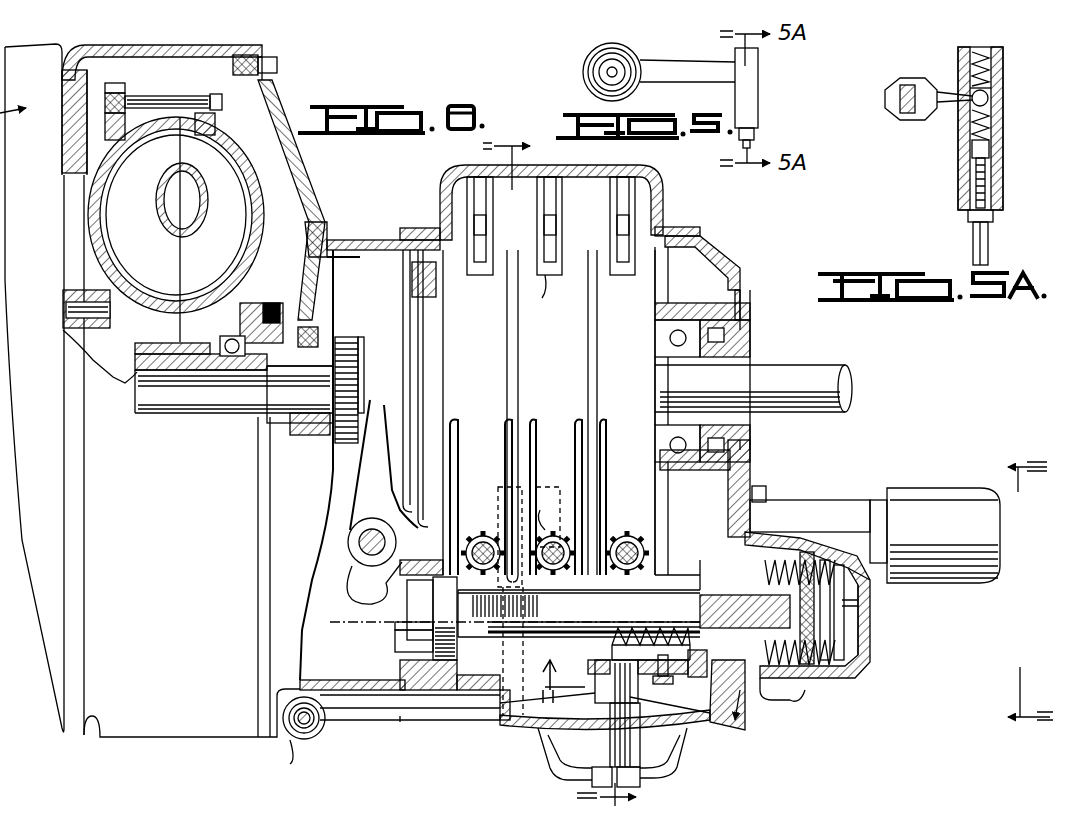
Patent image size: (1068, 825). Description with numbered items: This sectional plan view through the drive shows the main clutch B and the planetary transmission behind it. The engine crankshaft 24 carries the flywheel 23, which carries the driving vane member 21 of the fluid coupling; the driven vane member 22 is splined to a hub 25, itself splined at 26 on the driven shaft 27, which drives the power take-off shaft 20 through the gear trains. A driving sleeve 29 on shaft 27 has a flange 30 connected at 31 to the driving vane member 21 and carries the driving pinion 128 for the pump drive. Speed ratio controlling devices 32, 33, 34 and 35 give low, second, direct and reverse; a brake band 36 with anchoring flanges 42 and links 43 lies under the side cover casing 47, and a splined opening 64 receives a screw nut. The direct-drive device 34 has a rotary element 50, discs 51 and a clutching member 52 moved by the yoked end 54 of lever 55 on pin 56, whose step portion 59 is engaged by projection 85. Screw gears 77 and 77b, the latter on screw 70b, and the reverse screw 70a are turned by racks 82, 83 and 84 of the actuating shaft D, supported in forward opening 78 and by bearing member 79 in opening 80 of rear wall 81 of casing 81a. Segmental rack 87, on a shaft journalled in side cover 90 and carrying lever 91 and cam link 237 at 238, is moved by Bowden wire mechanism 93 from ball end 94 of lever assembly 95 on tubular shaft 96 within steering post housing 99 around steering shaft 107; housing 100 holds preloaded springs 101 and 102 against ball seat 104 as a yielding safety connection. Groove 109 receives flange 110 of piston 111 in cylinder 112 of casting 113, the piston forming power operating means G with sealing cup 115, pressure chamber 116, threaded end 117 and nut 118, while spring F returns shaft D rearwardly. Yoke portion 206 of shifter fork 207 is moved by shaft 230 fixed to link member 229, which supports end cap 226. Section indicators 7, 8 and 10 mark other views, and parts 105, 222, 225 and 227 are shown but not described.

In FIG. 6, the power take-off shaft 20 is at (852, 388).
In FIG. 6, the driving vane member 21 is at (252, 190).
In FIG. 6, the driven vane member 22 is at (162, 312).
In FIG. 6, the engine flywheel 23 is at (118, 86).
In FIG. 6, the engine crankshaft 24 is at (72, 340).
In FIG. 6, the hub 25 is at (140, 376).
In FIG. 6, the spline 26 is at (158, 378).
In FIG. 6, the driven shaft 27 is at (222, 392).
In FIG. 6, the driving pinion 128 is at (300, 380).
In FIG. 6, the driving sleeve 29 is at (312, 434).
In FIG. 6, the hub or flange 30 is at (270, 270).
In FIG. 6, the connection 31 is at (278, 300).
In FIG. 6, the low speed braking device 32 is at (566, 250).
In FIG. 6, the second speed braking device 33 is at (502, 252).
In FIG. 6, the third speed clutching controlling device 34 is at (390, 290).
In FIG. 6, the reverse braking device 35 is at (670, 228).
In FIG. 6, the outer band 36 is at (606, 322).
In FIG. 6, the anchoring flanges 42 is at (555, 289).
In FIG. 6, the links 43 is at (536, 212).
In FIG. 6, the transmission side cover casing 47 is at (565, 172).
In FIG. 6, the rotary controlling element 50 is at (442, 228).
In FIG. 6, the discs 51 is at (400, 245).
In FIG. 6, the axially movable clutching member 52 is at (396, 296).
In FIG. 6, the yoked end 54 is at (378, 340).
In FIG. 6, the actuating lever 55 is at (360, 486).
In FIG. 6, the pin 56 is at (348, 545).
In FIG. 6, the step actuating portion 59 is at (366, 600).
In FIG. 6, the splined opening 64 is at (553, 543).
In FIG. 6, the operating shaft or screw 70a is at (652, 540).
In FIG. 6, the operating shaft or screw 70b is at (492, 530).
In FIG. 6, the gear 77 is at (546, 512).
In FIG. 6, the gear 77b is at (422, 600).
In FIG. 6, the forward opening 78 is at (420, 650).
In FIG. 6, the bearing member 79 is at (712, 556).
In FIG. 6, the opening 80 is at (742, 695).
In FIG. 6, the rear end wall 81 is at (745, 488).
In FIG. 6, the transmission casing 81a is at (728, 260).
In FIG. 6, the low speed rack 82 is at (572, 592).
In FIG. 6, the reverse rack 83 is at (640, 626).
In FIG. 6, the second speed rack 84 is at (499, 616).
In FIG. 6, the third speed actuating projection 85 is at (395, 630).
In FIG. 6, the segmental rack 87 is at (612, 720).
In FIG. 6, the transmission side cover 90 is at (680, 732).
In FIG. 6, the lever 91 is at (644, 772).
In FIG. 5, the Bowden wire operating mechanism 93 is at (757, 138).
In FIG. 5A, the Bowden wire operating mechanism 93 is at (990, 240).
In FIG. 5A, the ball end 94 is at (989, 99).
In FIG. 5, the lever assembly 95 is at (660, 78).
In FIG. 5A, the lever assembly 95 is at (906, 120).
In FIG. 5, the tubular shaft 96 is at (635, 55).
In FIG. 5, the outer stationary tubular housing 99 is at (592, 48).
In FIG. 5, the housing 100 is at (760, 90).
In FIG. 5A, the housing 100 is at (1003, 165).
In FIG. 5A, the spring 101 is at (958, 58).
In FIG. 5A, the spring 102 is at (1003, 142).
In FIG. 5A, the ball seat 104 is at (1003, 120).
In FIG. 5A, the seat 105 is at (1003, 88).
In FIG. 5, the hollow steering shaft 107 is at (600, 88).
In FIG. 6, the groove 109 is at (815, 540).
In FIG. 6, the flange 110 is at (800, 660).
In FIG. 6, the fluid pressure operating piston assembly 111 is at (845, 628).
In FIG. 6, the cylinder 112 is at (866, 655).
In FIG. 6, the casting 113 is at (796, 506).
In FIG. 6, the flexible sealing cup 115 is at (840, 668).
In FIG. 6, the pressure chamber 116 is at (858, 640).
In FIG. 6, the threaded reduced end 117 is at (858, 618).
In FIG. 6, the nut 118 is at (865, 605).
In FIG. 6, the yoke portion 206 is at (533, 490).
In FIG. 6, the shifter fork 207 is at (505, 490).
In FIG. 6, the bolt 222 is at (318, 738).
In FIG. 6, the plate 225 is at (380, 694).
In FIG. 6, the end cap 226 is at (266, 761).
In FIG. 6, the nut 227 is at (308, 740).
In FIG. 6, the link member 229 is at (402, 722).
In FIG. 6, the shaft 230 is at (480, 650).
In FIG. 6, the cam link 237 is at (718, 680).
In FIG. 6, the support 238 is at (645, 660).
In FIG. 6, the main clutch B is at (240, 124).
In FIG. 6, the actuating shaft D is at (800, 680).
In FIG. 6, the prime mover means F is at (770, 560).
In FIG. 6, the power operating means G is at (870, 588).
In FIG. 6, the section line 7 is at (580, 463).
In FIG. 6, the section line 8 is at (1005, 594).
In FIG. 6, the section line 10 is at (656, 707).